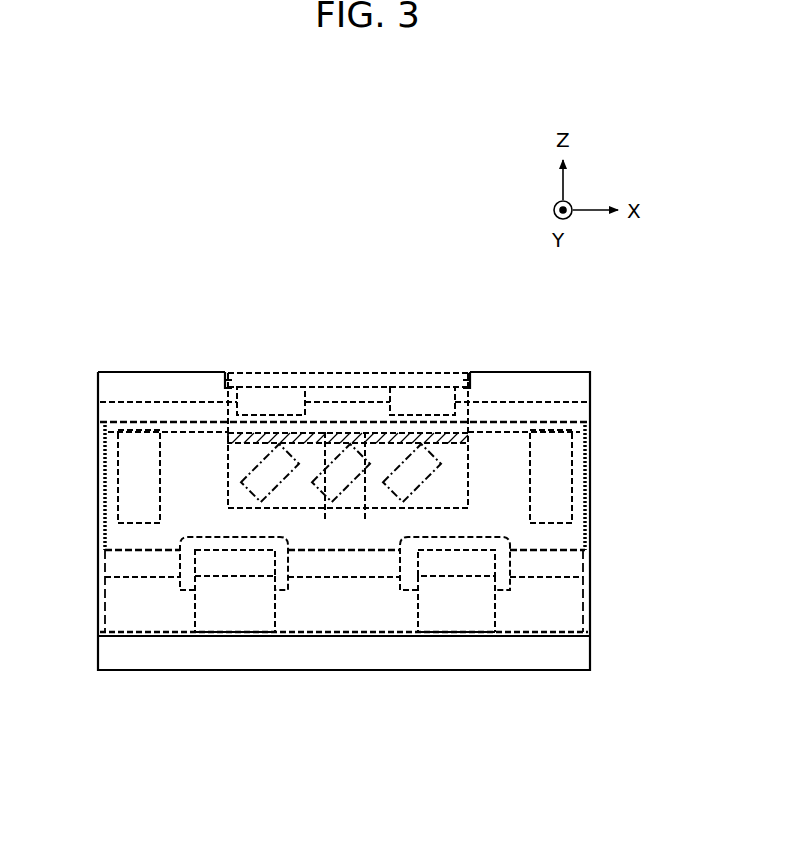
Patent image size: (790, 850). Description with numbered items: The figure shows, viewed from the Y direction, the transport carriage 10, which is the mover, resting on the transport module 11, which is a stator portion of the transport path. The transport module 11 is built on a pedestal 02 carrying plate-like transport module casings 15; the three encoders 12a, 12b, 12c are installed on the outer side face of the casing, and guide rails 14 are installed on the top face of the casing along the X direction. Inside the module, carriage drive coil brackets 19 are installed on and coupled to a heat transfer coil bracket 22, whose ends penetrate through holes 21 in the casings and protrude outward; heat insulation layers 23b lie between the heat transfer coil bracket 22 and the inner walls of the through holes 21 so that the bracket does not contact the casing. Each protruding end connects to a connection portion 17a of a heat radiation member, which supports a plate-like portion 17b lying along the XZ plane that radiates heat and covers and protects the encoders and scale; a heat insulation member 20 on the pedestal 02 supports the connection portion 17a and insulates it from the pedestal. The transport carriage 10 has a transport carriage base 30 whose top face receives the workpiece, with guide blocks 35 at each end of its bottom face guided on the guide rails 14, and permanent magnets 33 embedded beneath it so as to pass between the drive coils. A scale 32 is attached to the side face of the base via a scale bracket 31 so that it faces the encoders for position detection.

The transport carriage 10 is at (401, 297).
The transport module 11 is at (553, 728).
The pedestal 02 is at (343, 655).
The encoder 12a is at (140, 437).
The encoder 12b is at (345, 430).
The encoder 12c is at (552, 432).
The guide rail 14 is at (580, 412).
The transport module casing 15 is at (578, 616).
The connection portion 17a is at (370, 636).
The heat transfer coil bracket 22 is at (243, 565).
The plate-like portion 17b is at (580, 383).
The carriage drive coil bracket 19 is at (578, 535).
The heat insulation member 20 is at (215, 627).
The through hole 21 is at (205, 547).
The heat insulation layer 23b is at (279, 543).
The transport carriage base 30 is at (310, 388).
The scale bracket 31 is at (500, 392).
The scale 32 is at (454, 392).
The permanent magnet 33 is at (427, 455).
The guide block 35 is at (273, 398).